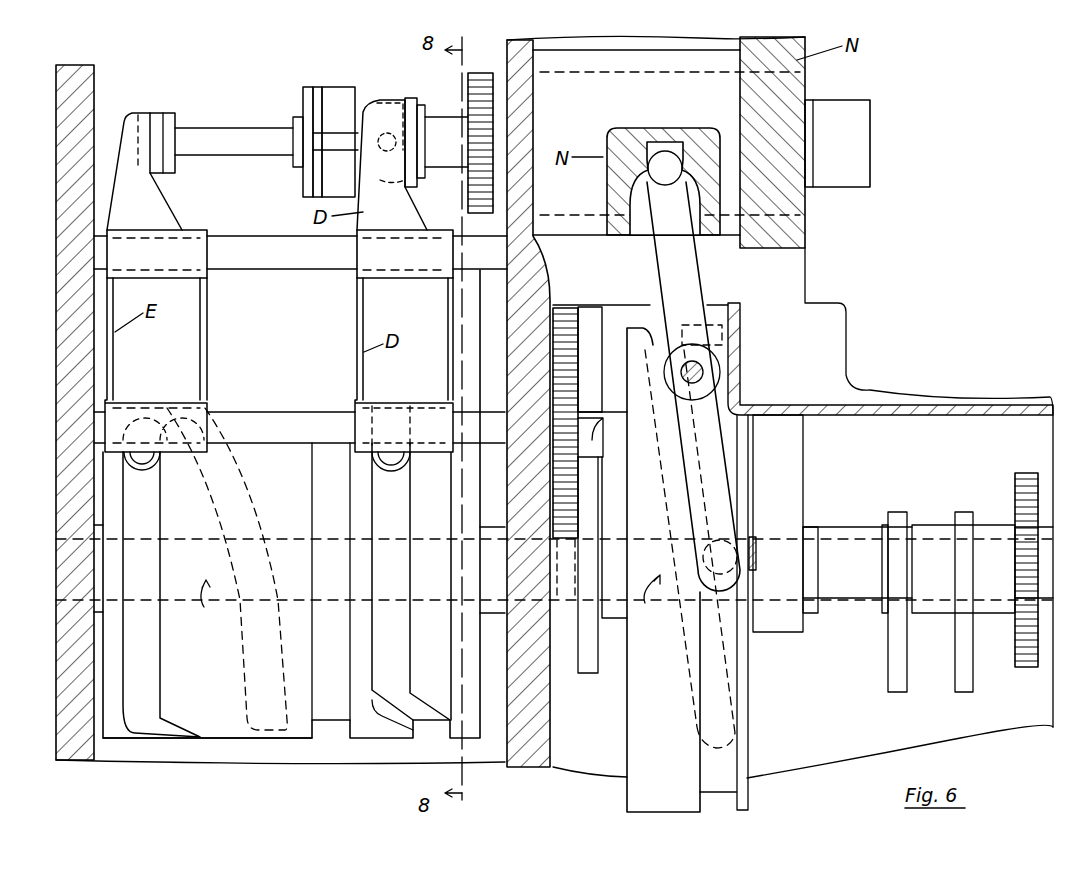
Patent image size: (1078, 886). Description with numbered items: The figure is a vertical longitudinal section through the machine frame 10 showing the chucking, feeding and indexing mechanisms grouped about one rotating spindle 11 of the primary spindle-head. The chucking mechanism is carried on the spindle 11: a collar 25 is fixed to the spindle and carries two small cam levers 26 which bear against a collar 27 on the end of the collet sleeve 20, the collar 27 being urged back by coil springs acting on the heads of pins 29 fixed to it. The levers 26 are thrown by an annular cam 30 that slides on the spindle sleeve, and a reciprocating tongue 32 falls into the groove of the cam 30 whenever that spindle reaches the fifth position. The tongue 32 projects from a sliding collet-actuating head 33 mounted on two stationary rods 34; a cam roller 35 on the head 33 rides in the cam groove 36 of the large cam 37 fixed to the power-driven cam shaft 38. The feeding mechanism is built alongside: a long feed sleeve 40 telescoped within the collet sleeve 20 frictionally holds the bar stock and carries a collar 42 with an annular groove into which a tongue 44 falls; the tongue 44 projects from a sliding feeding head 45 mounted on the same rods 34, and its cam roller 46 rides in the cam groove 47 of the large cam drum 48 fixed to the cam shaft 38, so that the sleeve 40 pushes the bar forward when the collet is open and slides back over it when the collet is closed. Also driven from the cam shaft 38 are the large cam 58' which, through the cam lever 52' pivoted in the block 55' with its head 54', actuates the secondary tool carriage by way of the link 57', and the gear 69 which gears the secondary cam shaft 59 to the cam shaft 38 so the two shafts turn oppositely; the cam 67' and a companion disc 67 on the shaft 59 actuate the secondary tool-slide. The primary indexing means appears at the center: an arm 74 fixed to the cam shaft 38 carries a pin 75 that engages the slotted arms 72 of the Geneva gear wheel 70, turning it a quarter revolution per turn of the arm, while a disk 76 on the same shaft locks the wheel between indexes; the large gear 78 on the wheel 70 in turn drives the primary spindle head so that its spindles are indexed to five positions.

The frame 10 is at (60, 232).
The spindle 11 is at (851, 106).
The collet sleeve 20 is at (446, 168).
The collar 25 is at (339, 90).
The cam levers 26 is at (341, 150).
The collar 27 is at (303, 90).
The pins 29 is at (318, 100).
The annular cam 30 is at (370, 108).
The tongue 32 is at (413, 100).
The collet-actuating head 33 is at (404, 475).
The stationary rods 34 is at (256, 246).
The cam roller 35 is at (391, 468).
The cam groove 36 is at (398, 642).
The large cam 37 is at (380, 735).
The cam shaft 38 is at (330, 603).
The feed sleeve 40 is at (236, 130).
The collar 42 is at (176, 115).
The tongue 44 is at (157, 113).
The feeding head 45 is at (160, 213).
The cam roller 46 is at (145, 470).
The cam groove 47 is at (232, 509).
The cam drum 48 is at (295, 738).
The cam lever 52' is at (699, 465).
The lever head 54' is at (664, 178).
The guide block 55' is at (663, 164).
The link bar 57' is at (699, 612).
The large cam 58' is at (663, 570).
The secondary cam shaft 59 is at (755, 566).
The disc 67 is at (875, 602).
The cam 67' is at (946, 618).
The gear 69 is at (1027, 668).
The Geneva gear wheel 70 is at (590, 335).
The slotted arms 72 is at (593, 412).
The arm 74 is at (614, 490).
The pin 75 is at (592, 437).
The disk 76 is at (589, 674).
The large gear 78 is at (566, 312).